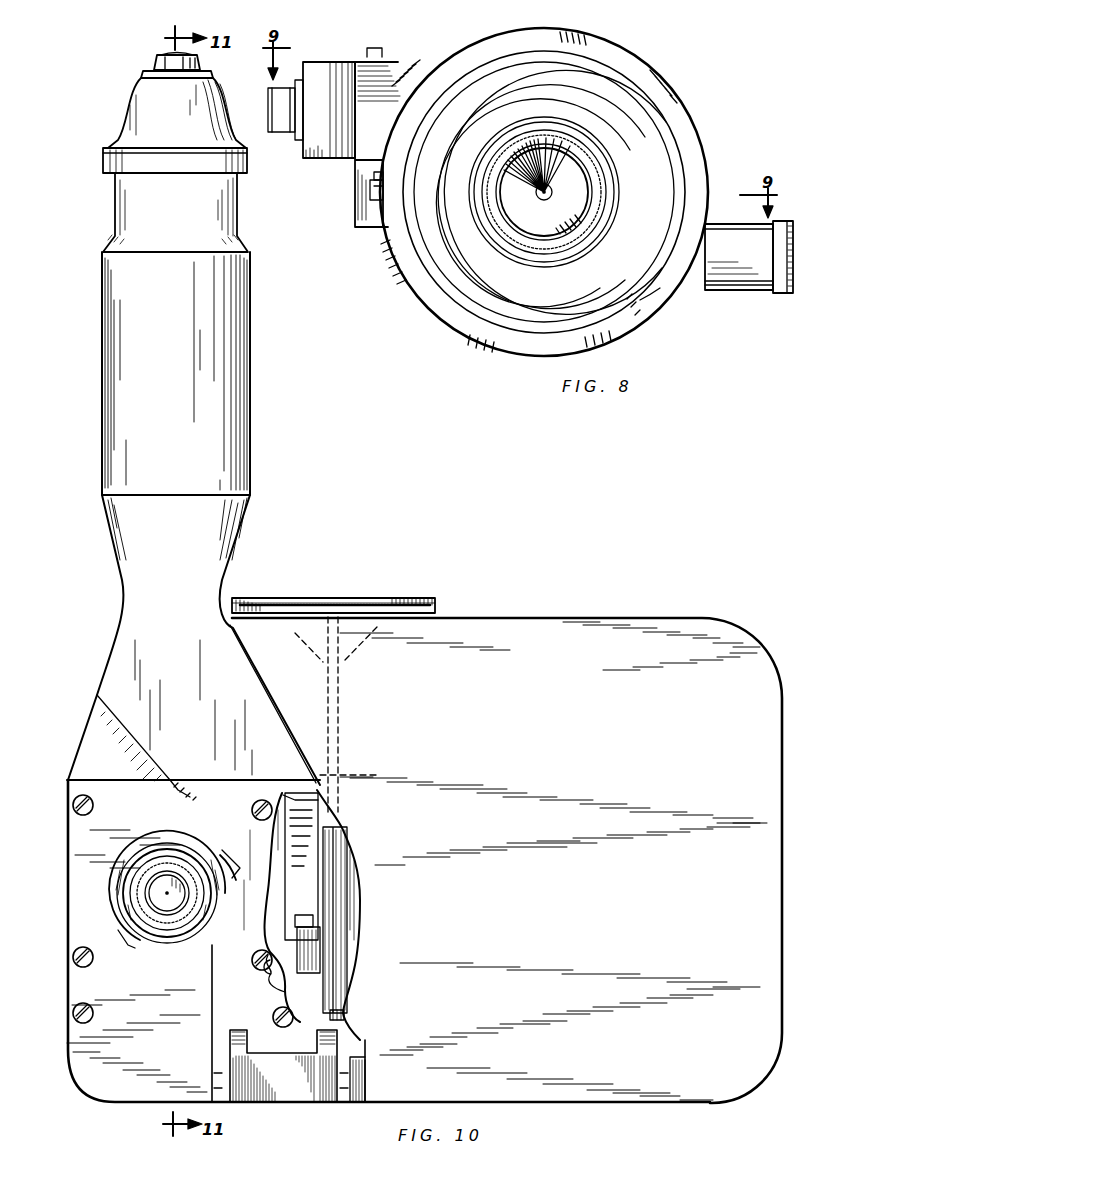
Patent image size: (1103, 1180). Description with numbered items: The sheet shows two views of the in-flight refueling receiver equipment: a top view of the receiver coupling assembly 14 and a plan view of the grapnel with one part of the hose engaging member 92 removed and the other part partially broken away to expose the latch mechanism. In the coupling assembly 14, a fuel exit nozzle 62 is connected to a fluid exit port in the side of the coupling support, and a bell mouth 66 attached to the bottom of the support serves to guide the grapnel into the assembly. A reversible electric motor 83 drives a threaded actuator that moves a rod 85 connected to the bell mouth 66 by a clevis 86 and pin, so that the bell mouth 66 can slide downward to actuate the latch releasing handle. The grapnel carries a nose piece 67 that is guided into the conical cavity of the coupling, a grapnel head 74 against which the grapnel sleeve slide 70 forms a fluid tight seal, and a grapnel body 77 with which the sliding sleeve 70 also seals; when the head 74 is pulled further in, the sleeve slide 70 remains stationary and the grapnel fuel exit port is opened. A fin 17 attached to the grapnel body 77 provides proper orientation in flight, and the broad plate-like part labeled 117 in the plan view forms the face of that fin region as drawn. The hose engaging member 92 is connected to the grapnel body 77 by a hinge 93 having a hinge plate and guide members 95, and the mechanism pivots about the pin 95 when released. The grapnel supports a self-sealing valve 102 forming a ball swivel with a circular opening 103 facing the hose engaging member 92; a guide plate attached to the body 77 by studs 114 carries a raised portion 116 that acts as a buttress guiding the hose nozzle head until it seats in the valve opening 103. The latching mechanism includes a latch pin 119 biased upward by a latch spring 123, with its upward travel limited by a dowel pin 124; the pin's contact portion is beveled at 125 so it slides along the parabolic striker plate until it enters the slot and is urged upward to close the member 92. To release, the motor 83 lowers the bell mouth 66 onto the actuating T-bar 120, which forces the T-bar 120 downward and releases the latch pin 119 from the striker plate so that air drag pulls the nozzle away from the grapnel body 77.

In FIG. 8, the receiver coupling assembly 14 is at (695, 118).
In FIG. 8, the fuel exit nozzle 62 is at (745, 249).
In FIG. 8, the bell mouth 66 is at (653, 303).
In FIG. 8, the reversible electric motor 83 is at (335, 118).
In FIG. 8, the rod 85 is at (374, 176).
In FIG. 8, the clevis 86 is at (370, 192).
In FIG. 10, the grapnel nose piece 67 is at (152, 78).
In FIG. 10, the grapnel head 74 is at (128, 115).
In FIG. 10, the grapnel sleeve slide 70 is at (115, 215).
In FIG. 10, the grapnel body 77 is at (248, 385).
In FIG. 10, the hose engaging member 92 is at (62, 765).
In FIG. 10, the fin 17 is at (540, 616).
In FIG. 10, the cover plate 117 is at (608, 766).
In FIG. 10, the actuating T-bar 120 is at (343, 597).
In FIG. 10, the raised portion 116 is at (177, 797).
In FIG. 10, the studs 114 is at (72, 804).
In FIG. 10, the self-sealing valve 102 is at (132, 862).
In FIG. 10, the circular opening 103 is at (152, 891).
In FIG. 10, the beveled edge 125 is at (307, 920).
In FIG. 10, the latch pin 119 is at (305, 937).
In FIG. 10, the dowel pin 124 is at (253, 961).
In FIG. 10, the latch spring 123 is at (345, 1015).
In FIG. 10, the guide members 95 is at (221, 1094).
In FIG. 10, the hinge 93 is at (368, 1078).